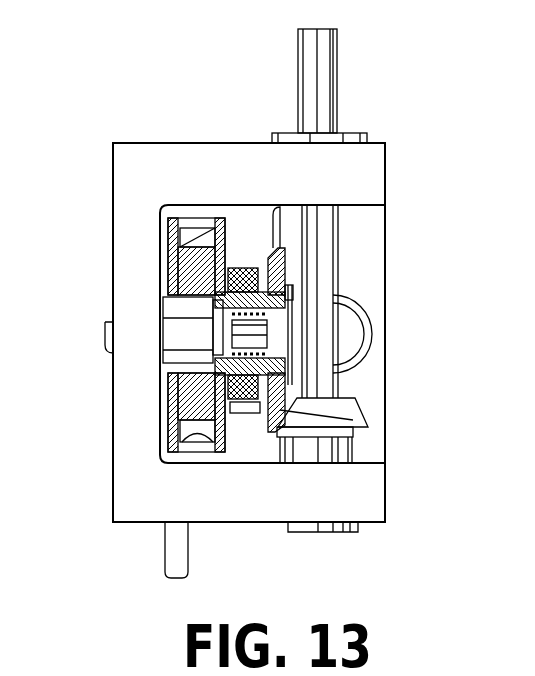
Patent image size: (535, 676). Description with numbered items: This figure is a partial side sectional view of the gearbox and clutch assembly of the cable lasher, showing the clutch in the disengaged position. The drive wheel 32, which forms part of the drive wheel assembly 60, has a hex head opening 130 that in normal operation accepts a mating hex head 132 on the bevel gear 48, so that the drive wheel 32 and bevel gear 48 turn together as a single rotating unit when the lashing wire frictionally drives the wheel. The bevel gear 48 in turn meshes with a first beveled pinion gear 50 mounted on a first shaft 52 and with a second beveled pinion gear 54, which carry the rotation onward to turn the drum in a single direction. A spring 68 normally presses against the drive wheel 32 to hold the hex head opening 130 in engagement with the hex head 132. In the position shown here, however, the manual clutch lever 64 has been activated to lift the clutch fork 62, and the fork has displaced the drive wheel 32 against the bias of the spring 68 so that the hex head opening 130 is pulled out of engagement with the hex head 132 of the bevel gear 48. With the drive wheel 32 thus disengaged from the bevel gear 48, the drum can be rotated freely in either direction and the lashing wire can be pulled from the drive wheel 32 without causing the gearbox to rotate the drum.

The drive wheel 32 is at (190, 228).
The bevel gear 48 is at (287, 296).
The first beveled pinion gear 50 is at (352, 412).
The first shaft 52 is at (317, 65).
The second beveled pinion gear 54 is at (358, 343).
The drive wheel assembly 60 is at (238, 420).
The clutch fork 62 is at (247, 277).
The manual clutch lever 64 is at (172, 548).
The spring 68 is at (165, 282).
The hex head opening 130 is at (212, 293).
The hex head 132 is at (283, 285).